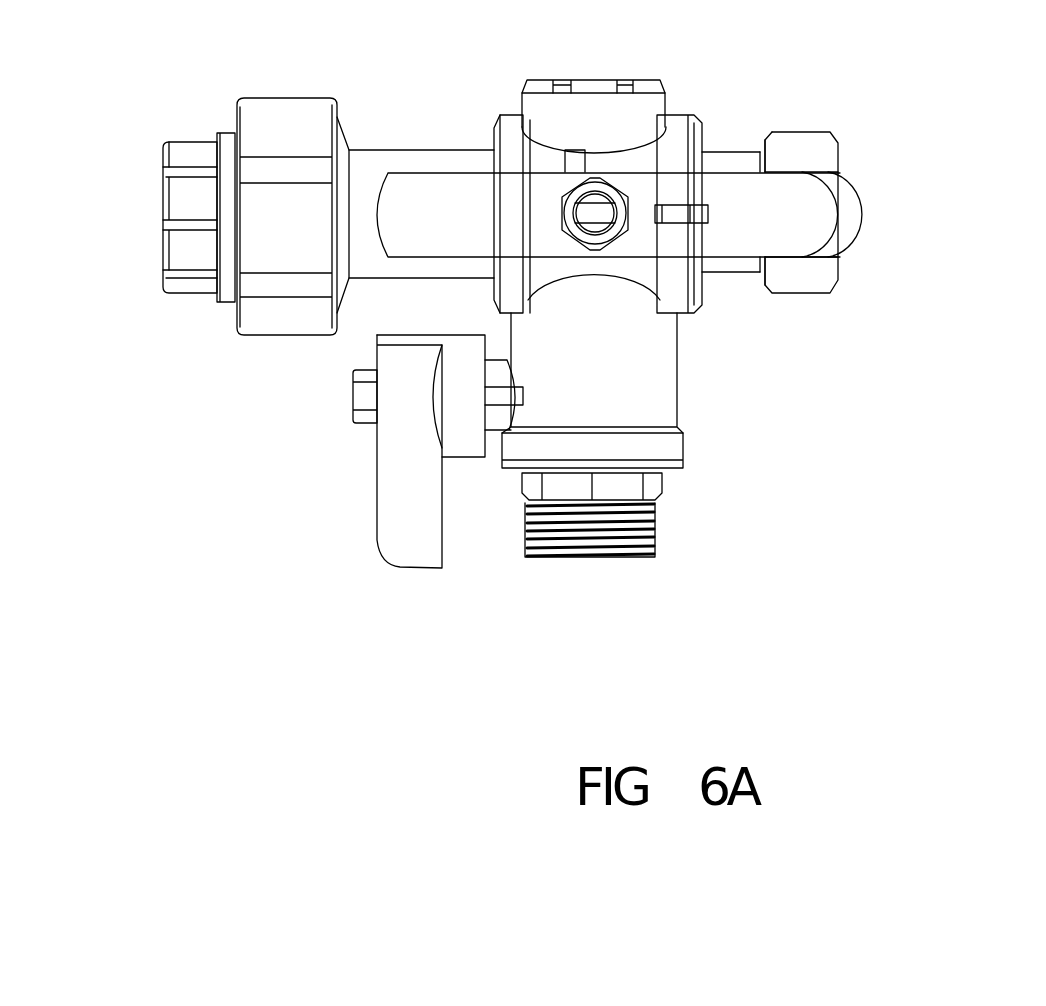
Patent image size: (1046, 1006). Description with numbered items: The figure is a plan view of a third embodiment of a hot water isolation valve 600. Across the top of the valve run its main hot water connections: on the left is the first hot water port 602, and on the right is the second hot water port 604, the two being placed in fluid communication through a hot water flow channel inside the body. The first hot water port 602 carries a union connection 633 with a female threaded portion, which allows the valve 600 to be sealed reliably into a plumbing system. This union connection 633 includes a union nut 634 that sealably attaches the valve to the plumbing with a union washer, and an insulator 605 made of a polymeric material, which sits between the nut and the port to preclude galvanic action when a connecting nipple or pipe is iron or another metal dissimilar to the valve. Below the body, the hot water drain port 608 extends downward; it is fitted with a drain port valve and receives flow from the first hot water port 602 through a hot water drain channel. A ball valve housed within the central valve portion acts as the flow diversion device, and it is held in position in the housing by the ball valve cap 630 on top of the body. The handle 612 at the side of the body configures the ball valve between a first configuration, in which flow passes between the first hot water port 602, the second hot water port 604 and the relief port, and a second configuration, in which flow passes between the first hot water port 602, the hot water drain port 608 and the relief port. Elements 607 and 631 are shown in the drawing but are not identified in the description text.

The hot water isolation valve 600 is at (588, 291).
The first hot water port 602 is at (160, 217).
The second hot water port 604 is at (842, 210).
The insulator 605 is at (223, 133).
The handle 607 is at (403, 520).
The hot water drain port 608 is at (592, 555).
The handle 612 is at (783, 185).
The ball valve cap 630 is at (652, 85).
The stem nut 631 is at (627, 223).
The union connection 633 is at (185, 282).
The union nut 634 is at (282, 327).